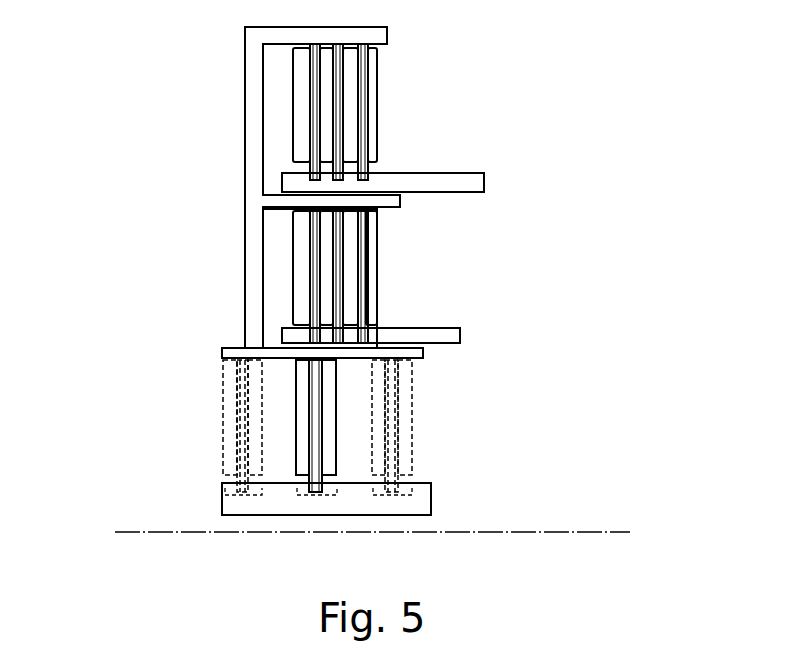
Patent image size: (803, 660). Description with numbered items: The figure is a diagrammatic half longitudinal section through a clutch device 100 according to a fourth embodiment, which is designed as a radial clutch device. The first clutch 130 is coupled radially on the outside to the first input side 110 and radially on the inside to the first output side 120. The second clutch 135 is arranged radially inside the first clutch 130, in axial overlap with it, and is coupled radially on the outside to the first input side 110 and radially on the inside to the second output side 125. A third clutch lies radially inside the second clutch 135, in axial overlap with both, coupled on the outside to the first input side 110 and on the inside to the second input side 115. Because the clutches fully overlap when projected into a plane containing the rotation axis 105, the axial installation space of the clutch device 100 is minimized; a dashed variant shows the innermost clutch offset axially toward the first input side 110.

The clutch device 100 is at (118, 327).
The rotation axis 105 is at (620, 532).
The first input side 110 is at (253, 223).
The second input side 115 is at (422, 490).
The first output side 120 is at (468, 182).
The second output side 125 is at (446, 336).
The first clutch 130 is at (392, 48).
The second clutch 135 is at (402, 213).